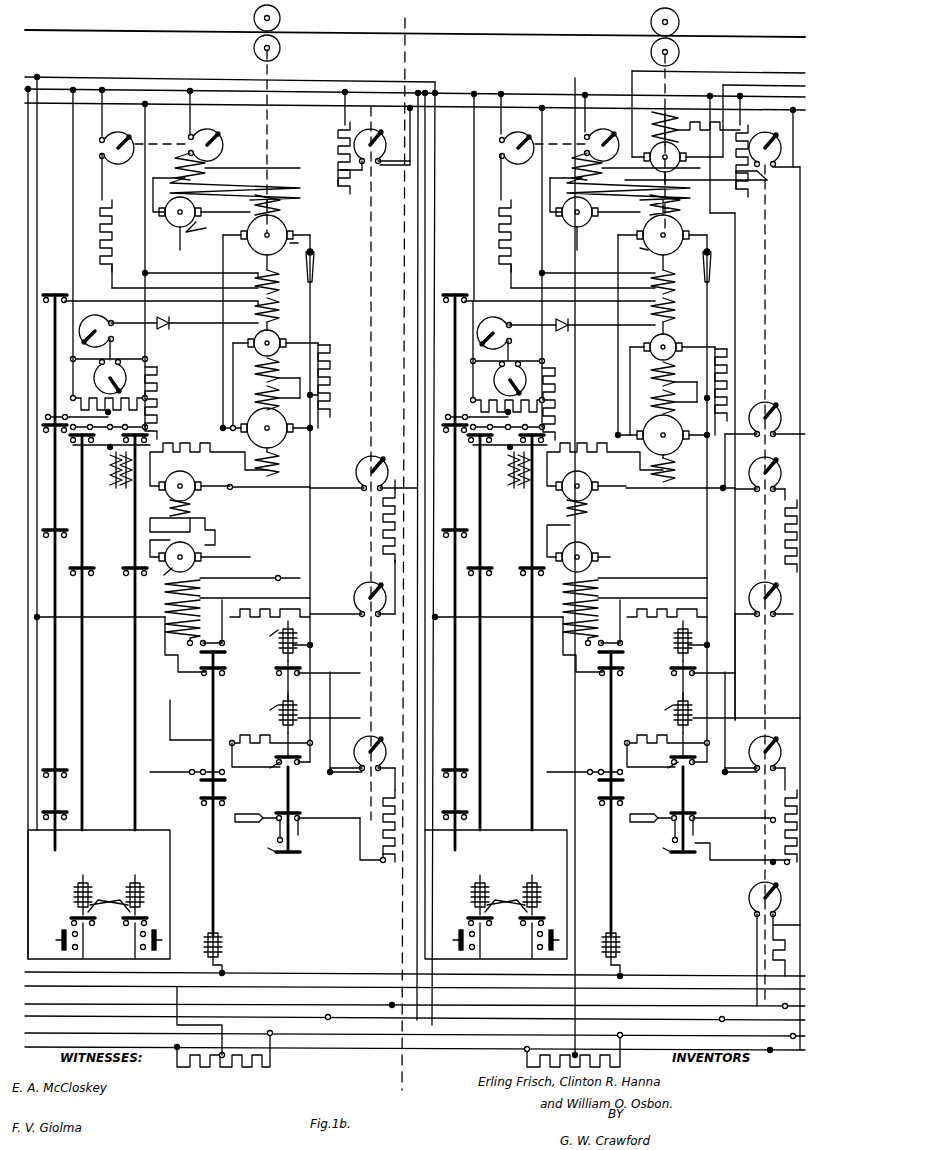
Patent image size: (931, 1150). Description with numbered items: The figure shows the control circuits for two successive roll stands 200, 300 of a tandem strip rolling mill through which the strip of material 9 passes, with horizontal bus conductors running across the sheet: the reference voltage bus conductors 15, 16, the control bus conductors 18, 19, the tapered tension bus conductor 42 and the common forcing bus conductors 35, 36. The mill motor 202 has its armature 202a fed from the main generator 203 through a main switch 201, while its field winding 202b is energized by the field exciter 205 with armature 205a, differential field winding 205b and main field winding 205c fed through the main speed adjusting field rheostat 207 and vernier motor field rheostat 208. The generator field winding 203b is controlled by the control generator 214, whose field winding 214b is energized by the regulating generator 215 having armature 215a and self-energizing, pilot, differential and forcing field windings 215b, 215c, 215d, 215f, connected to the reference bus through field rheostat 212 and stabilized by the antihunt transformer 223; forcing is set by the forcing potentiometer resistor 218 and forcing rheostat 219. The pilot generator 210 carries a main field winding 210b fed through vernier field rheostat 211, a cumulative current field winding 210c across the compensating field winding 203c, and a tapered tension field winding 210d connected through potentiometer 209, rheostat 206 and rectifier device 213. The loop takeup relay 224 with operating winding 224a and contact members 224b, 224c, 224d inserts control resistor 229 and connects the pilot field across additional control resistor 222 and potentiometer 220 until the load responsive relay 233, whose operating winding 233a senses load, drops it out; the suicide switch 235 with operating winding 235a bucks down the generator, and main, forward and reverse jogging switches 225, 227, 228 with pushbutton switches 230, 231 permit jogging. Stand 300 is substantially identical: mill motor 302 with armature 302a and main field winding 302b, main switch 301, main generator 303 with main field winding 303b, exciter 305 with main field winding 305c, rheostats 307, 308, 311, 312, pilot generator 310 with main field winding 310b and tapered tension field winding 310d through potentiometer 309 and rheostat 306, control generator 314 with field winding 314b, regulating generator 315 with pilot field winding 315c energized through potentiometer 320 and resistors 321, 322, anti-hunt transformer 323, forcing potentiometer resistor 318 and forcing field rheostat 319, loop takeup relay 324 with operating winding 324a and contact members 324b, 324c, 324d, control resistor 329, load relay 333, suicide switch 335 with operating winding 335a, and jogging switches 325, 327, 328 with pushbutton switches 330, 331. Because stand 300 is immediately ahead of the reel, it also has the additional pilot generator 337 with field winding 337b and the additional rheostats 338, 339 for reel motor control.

The strip of material 9 is at (468, 30).
The reference voltage bus conductor 15 is at (415, 1024).
The reference voltage bus conductor 16 is at (256, 1004).
The control bus conductor 18 is at (548, 96).
The control bus conductor 19 is at (525, 553).
The forcing bus conductor 35 is at (66, 1047).
The forcing bus conductor 36 is at (144, 1033).
The tapered tension bus conductor 42 is at (232, 80).
The roll stand 200 is at (325, 23).
The main switch 201 is at (316, 268).
The mill motor 202 is at (333, 221).
The armature 202a is at (300, 242).
The field winding 202b is at (290, 205).
The main generator 203 is at (358, 423).
The field winding 203b is at (269, 469).
The compensating field winding 203c is at (276, 397).
The field exciter 205 is at (170, 243).
The armature 205a is at (207, 228).
The differential field winding 205b is at (226, 194).
The main field winding 205c is at (237, 166).
The rheostat 206 is at (107, 337).
The main speed adjusting field rheostat 207 is at (356, 140).
The vernier motor field rheostat 208 is at (213, 136).
The potentiometer 209 is at (114, 356).
The pilot generator 210 is at (281, 369).
The main field winding 210b is at (278, 274).
The cumulative current field winding 210c is at (267, 378).
The tapered tension field winding 210d is at (279, 310).
The vernier field rheostat 211 is at (117, 156).
The field rheostat 212 is at (368, 458).
The rectifier device 213 is at (184, 331).
The control generator 214 is at (208, 472).
The field winding 214b is at (167, 506).
The regulating generator 215 is at (220, 574).
The armature 215a is at (157, 572).
The self-energizing field winding 215b is at (182, 531).
The pilot field winding 215c is at (195, 636).
The differential field winding 215d is at (232, 587).
The forcing field winding 215f is at (237, 607).
The forcing potentiometer resistor 218 is at (241, 1070).
The forcing rheostat 219 is at (360, 594).
The potentiometer 220 is at (366, 742).
The additional control resistor 222 is at (378, 846).
The antihunt transformer 223 is at (111, 466).
The loop takeup relay 224 is at (280, 793).
The operating winding 224a is at (252, 706).
The contact member 224b is at (254, 767).
The contact member 224c is at (297, 809).
The contact member 224d is at (249, 848).
The main jogging switch 225 is at (58, 718).
The forward jogging switch 227 is at (140, 740).
The reverse jogging switch 228 is at (84, 770).
The control resistor 229 is at (260, 736).
The forward pushbutton switch 230 is at (60, 940).
The reverse pushbutton switch 231 is at (150, 942).
The load responsive relay 233 is at (268, 654).
The operating winding 233a is at (260, 628).
The suicide switch 235 is at (254, 899).
The operating winding 235a is at (224, 948).
The roll stand 300 is at (729, 23).
The main switch 301 is at (704, 266).
The mill motor 302 is at (721, 231).
The armature 302a is at (638, 260).
The main field winding 302b is at (674, 198).
The main generator 303 is at (622, 425).
The main field winding 303b is at (680, 473).
The exciter 305 is at (592, 226).
The main field winding 305c is at (628, 154).
The rheostat 306 is at (506, 338).
The main field rheostat 307 is at (712, 158).
The vernier rheostat 308 is at (608, 136).
The potentiometer 309 is at (513, 356).
The pilot generator 310 is at (678, 373).
The main field winding 310b is at (677, 282).
The tapered tension field winding 310d is at (648, 316).
The vernier rheostat 311 is at (517, 156).
The field rheostat 312 is at (768, 455).
The control generator 314 is at (605, 472).
The field winding 314b is at (563, 506).
The regulating generator 315 is at (566, 568).
The pilot field winding 315c is at (528, 636).
The forcing potentiometer resistor 318 is at (524, 1076).
The forcing field rheostat 319 is at (762, 588).
The pilot field potentiometer 320 is at (762, 745).
The resistor 321 is at (764, 812).
The additional control resistor 322 is at (764, 843).
The anti-hunt transformer 323 is at (510, 466).
The loop takeup relay 324 is at (673, 793).
The operating winding 324a is at (647, 706).
The contact member 324b is at (653, 767).
The contact member 324c is at (710, 813).
The contact member 324d is at (644, 848).
The main jogging switch 325 is at (454, 680).
The forward jogging switch 327 is at (536, 770).
The reverse jogging switch 328 is at (484, 770).
The control resistor 329 is at (655, 736).
The pushbutton switch 330 is at (457, 940).
The pushbutton switch 331 is at (546, 942).
The load relay 333 is at (672, 648).
The suicide switch 335 is at (654, 899).
The operating winding 335a is at (612, 952).
The additional pilot generator 337 is at (655, 166).
The field winding 337b is at (696, 126).
The rheostat 338 is at (776, 403).
The rheostat 339 is at (764, 886).